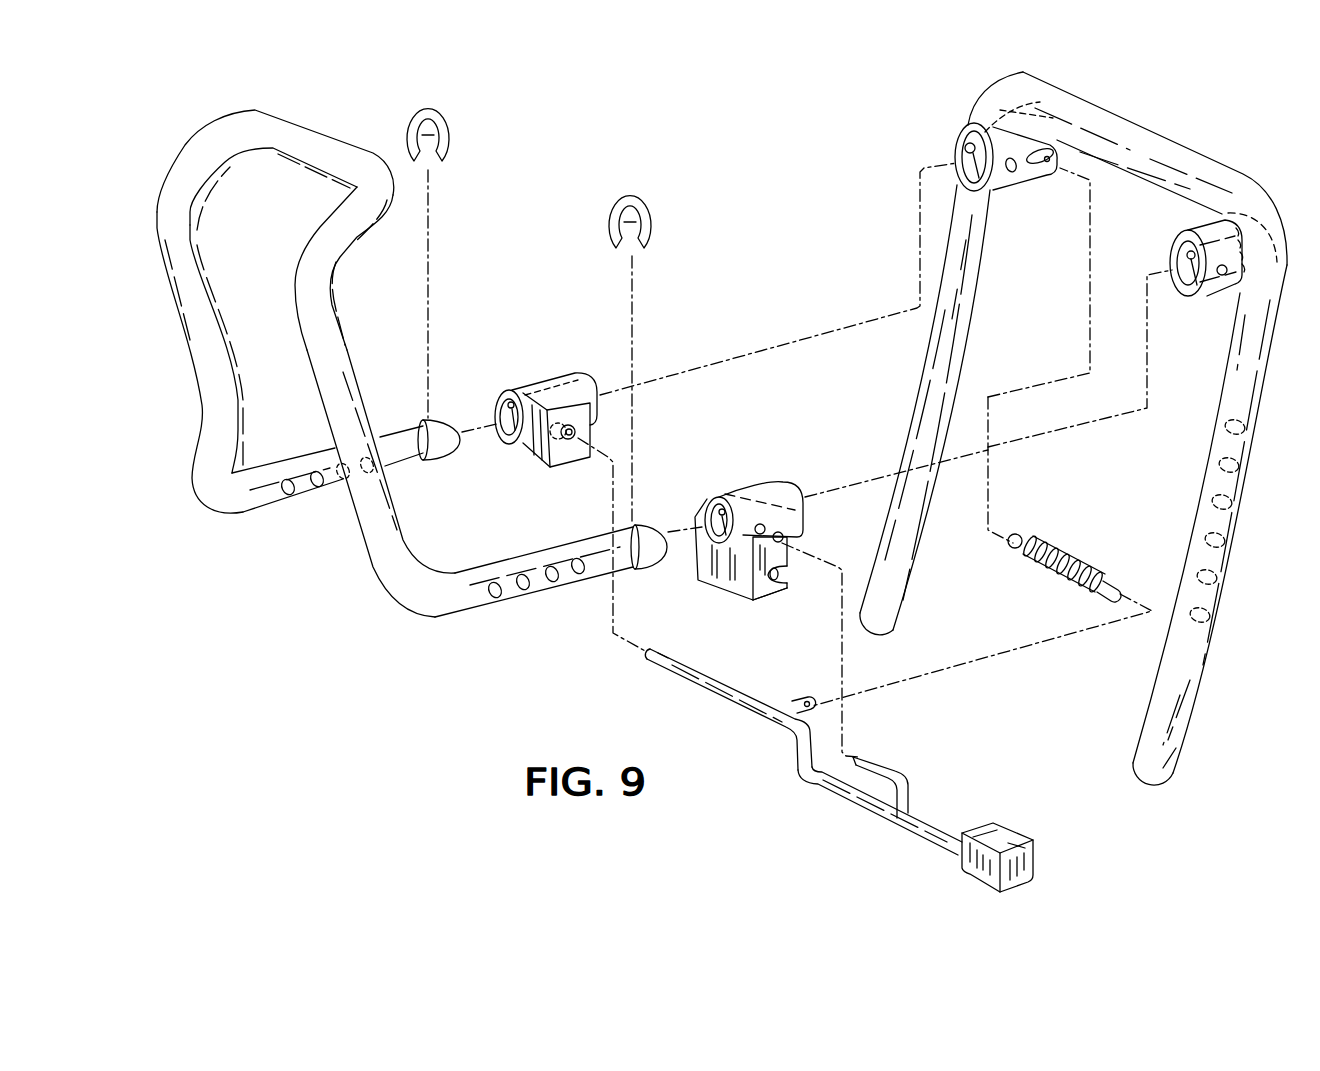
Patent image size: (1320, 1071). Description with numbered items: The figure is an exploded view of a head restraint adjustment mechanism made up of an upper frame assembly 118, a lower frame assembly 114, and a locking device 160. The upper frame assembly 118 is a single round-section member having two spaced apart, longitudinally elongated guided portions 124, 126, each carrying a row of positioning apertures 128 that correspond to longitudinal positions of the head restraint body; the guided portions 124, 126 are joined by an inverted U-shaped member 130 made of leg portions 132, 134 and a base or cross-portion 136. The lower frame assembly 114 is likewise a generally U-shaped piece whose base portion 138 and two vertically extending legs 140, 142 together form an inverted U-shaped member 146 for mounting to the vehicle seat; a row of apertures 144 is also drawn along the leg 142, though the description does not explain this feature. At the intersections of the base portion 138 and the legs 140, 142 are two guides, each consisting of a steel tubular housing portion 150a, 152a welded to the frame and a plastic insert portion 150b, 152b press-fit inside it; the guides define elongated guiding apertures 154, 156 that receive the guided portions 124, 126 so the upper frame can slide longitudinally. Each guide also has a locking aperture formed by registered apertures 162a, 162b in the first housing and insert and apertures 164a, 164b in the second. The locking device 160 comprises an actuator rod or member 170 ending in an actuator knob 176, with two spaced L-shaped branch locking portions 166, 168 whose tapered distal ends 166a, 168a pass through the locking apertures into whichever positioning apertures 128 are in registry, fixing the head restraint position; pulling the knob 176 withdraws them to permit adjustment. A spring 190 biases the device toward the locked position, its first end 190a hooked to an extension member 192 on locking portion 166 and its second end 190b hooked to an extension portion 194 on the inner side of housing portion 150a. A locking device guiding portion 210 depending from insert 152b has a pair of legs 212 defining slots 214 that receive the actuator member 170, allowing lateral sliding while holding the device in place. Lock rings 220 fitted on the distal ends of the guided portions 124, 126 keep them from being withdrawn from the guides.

The lower frame assembly 114 is at (1065, 433).
The upper frame assembly 118 is at (412, 368).
The guided portion 124 is at (307, 490).
The guided portion 126 is at (513, 592).
The positioning apertures 128 is at (315, 471).
The inverted U-shaped member 130 is at (325, 307).
The leg portion 132 is at (207, 310).
The leg portion 134 is at (340, 393).
The base or cross-portion 136 is at (323, 140).
The base or cross-portion 138 is at (1150, 144).
The leg 140 is at (907, 570).
The leg 142 is at (1187, 699).
The adjustment holes 144 is at (1228, 586).
The inverted U-shaped member 146 is at (932, 342).
The tubular housing portion 150a is at (1016, 152).
The insert portion 150b is at (530, 418).
The tubular housing portion 152a is at (1237, 247).
The insert portion 152b is at (766, 535).
The guiding aperture 154 is at (503, 443).
The guiding aperture 156 is at (720, 534).
The locking device 160 is at (793, 746).
The aperture 162a is at (1014, 172).
The aperture 162b is at (577, 439).
The aperture 164a is at (1219, 279).
The aperture 164b is at (764, 525).
The locking portion 166 is at (693, 673).
The distal end 166a is at (651, 661).
The locking portion 168 is at (897, 771).
The distal end 168a is at (858, 756).
The actuator rod or member 170 is at (866, 805).
The actuator knob 176 is at (1013, 830).
The spring 190 is at (1094, 536).
The first end of spring 190a is at (1120, 580).
The second end of spring 190b is at (1018, 534).
The extension member 192 is at (793, 700).
The extension portion 194 is at (1043, 152).
The locking device guiding portion 210 is at (770, 602).
The legs 212 is at (788, 588).
The slots 214 is at (782, 568).
The lock rings 220 is at (430, 115).